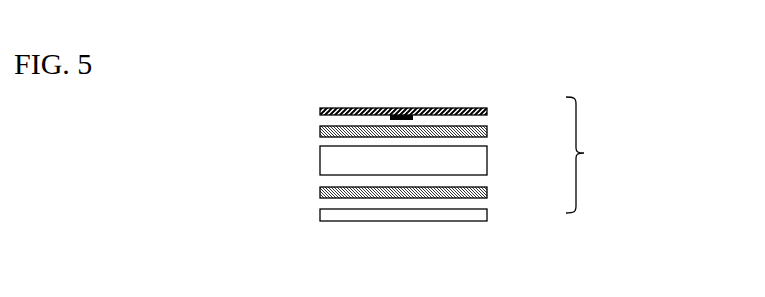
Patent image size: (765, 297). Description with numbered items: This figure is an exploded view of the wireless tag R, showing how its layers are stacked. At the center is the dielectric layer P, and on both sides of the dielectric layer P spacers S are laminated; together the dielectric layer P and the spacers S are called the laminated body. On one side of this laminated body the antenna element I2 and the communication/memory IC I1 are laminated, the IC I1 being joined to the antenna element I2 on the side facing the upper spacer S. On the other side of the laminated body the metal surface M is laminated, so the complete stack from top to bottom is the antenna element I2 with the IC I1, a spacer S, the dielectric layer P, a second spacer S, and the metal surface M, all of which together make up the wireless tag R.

The antenna element I2 is at (487, 110).
The communication/memory IC I1 is at (390, 117).
The spacer S is at (487, 131).
The dielectric layer P is at (478, 168).
The metal surface M is at (480, 218).
The wireless tag R is at (584, 155).